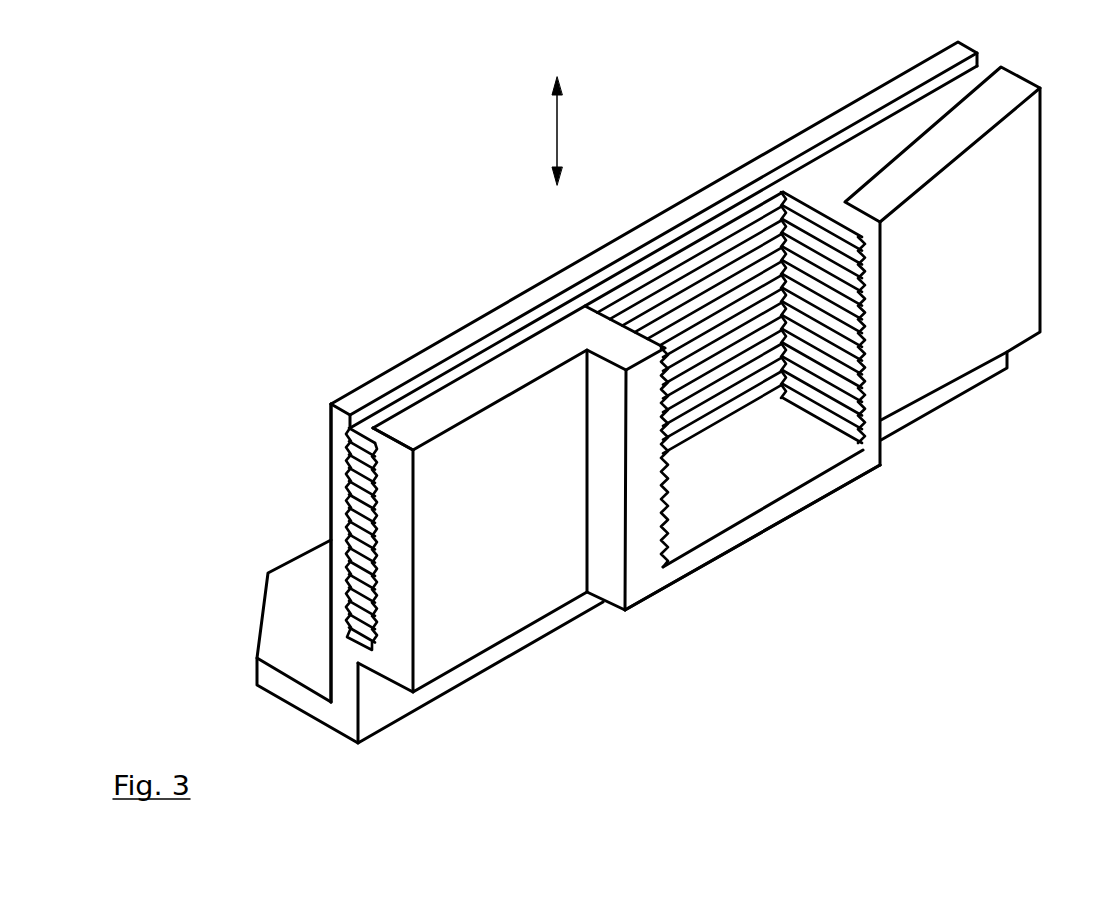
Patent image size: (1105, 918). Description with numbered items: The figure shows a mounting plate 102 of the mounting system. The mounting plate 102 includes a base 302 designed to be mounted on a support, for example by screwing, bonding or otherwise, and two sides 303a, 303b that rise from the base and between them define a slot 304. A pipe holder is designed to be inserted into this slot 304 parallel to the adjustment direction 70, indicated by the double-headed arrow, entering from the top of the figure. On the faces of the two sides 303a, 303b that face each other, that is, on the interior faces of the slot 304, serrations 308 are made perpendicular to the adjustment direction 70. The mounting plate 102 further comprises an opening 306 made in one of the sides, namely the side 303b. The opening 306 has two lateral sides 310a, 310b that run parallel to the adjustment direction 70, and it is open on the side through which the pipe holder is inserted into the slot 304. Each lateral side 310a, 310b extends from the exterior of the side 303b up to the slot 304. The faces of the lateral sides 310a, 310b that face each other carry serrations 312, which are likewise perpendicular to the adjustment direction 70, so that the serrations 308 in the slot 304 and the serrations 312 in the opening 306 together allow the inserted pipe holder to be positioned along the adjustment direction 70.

The mounting plate 102 is at (165, 128).
The adjustment direction 70 is at (573, 131).
The base 302 is at (290, 617).
The side 303a is at (342, 493).
The side 303b is at (480, 608).
The slot 304 is at (460, 380).
The opening 306 is at (778, 468).
The serrations 308 is at (350, 443).
The lateral side 310a is at (650, 493).
The lateral side 310b is at (875, 345).
The serrations 312 is at (822, 390).